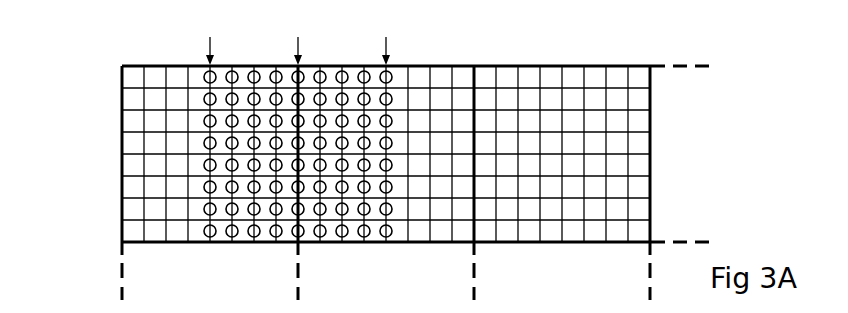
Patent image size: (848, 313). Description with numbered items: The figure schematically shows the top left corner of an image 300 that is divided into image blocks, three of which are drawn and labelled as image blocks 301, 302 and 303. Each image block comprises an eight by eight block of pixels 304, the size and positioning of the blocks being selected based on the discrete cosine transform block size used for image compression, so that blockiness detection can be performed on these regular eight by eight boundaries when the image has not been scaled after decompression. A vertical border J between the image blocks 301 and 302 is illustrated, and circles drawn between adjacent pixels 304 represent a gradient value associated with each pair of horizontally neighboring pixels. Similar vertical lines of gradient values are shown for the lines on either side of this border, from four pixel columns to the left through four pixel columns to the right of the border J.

The image 300 is at (95, 60).
The image block 301 is at (171, 57).
The image block 302 is at (417, 57).
The image block 303 is at (558, 57).
The pixels 304 is at (485, 100).